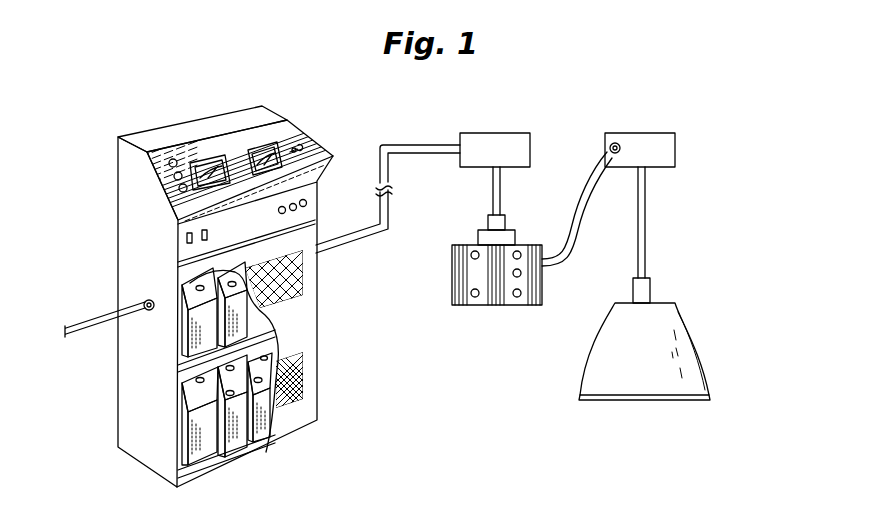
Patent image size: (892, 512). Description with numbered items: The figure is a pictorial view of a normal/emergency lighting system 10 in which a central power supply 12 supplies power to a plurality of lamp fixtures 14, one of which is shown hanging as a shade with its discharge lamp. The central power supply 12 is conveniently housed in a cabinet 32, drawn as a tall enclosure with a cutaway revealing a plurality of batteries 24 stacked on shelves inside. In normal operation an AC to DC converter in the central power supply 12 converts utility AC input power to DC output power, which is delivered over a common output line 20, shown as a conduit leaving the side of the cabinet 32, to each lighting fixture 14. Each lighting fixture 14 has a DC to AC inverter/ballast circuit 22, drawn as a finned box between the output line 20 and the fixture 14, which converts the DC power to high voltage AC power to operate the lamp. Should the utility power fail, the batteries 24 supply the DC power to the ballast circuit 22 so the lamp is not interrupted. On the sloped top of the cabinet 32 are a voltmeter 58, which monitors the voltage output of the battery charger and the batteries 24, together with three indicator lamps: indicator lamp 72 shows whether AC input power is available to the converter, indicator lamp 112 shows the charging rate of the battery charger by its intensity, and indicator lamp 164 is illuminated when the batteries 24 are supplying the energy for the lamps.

The lighting system 10 is at (519, 430).
The central power supply 12 is at (121, 467).
The lamp fixture 14 is at (705, 164).
The common output line 20 is at (358, 247).
The DC to AC inverter/ballast circuit 22 is at (493, 306).
The batteries 24 is at (262, 430).
The cabinet 32 is at (131, 264).
The voltmeter 58 is at (212, 158).
The indicator lamp 72 is at (173, 158).
The indicator lamp 112 is at (174, 176).
The indicator lamp 164 is at (179, 189).